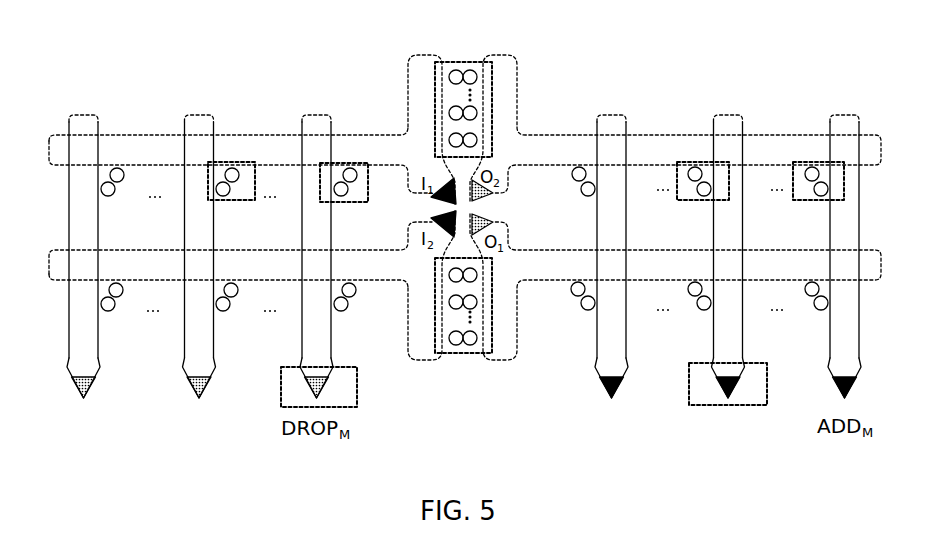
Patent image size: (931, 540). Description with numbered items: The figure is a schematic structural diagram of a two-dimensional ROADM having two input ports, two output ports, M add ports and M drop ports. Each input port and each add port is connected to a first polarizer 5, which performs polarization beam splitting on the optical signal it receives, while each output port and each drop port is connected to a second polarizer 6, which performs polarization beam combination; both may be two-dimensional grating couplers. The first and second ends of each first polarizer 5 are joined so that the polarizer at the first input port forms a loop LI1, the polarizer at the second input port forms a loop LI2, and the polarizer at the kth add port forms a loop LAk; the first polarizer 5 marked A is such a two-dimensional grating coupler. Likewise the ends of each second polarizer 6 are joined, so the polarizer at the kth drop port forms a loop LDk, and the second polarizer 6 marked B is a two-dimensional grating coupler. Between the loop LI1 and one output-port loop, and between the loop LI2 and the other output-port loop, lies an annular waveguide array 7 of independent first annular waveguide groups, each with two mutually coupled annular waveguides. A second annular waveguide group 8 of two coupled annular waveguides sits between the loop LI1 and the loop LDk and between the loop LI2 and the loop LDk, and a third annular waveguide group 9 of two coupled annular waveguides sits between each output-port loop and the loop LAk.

The first polarizer 5 is at (608, 392).
The second polarizer 6 is at (77, 392).
The annular waveguide array 7 is at (453, 63).
The second annular waveguide group 8 is at (247, 200).
The third annular waveguide group 9 is at (693, 200).
The first polarizer represented by A is at (768, 390).
The second polarizer represented by B is at (360, 392).
The loop including the second polarizer connected to the kth drop port LDk is at (197, 115).
The loop including the first polarizer connected to the kth add port LAk is at (728, 116).
The loop including the first polarizer connected to the input port I1 LI1 is at (408, 103).
The loop including the first polarizer connected to the input port I2 LI2 is at (408, 350).